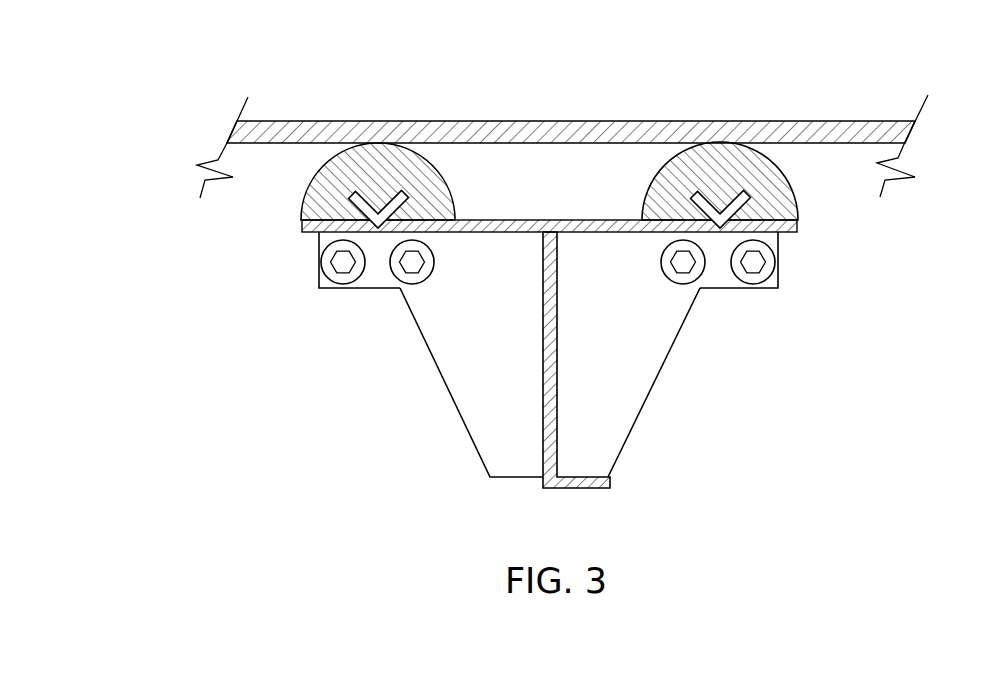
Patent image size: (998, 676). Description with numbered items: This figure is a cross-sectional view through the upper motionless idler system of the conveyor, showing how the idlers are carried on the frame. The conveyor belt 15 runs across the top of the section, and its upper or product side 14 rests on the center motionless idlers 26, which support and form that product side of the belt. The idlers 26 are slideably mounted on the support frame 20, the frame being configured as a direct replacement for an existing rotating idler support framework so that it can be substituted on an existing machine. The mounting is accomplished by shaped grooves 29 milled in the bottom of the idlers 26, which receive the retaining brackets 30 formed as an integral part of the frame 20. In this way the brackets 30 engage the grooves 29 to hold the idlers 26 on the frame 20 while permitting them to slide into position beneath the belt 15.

The product side 14 is at (577, 110).
The conveyor belt 15 is at (175, 143).
The support frame 20 is at (520, 360).
The center motionless idler 26 is at (571, 200).
The shaped groove 29 is at (362, 197).
The retaining bracket 30 is at (547, 283).